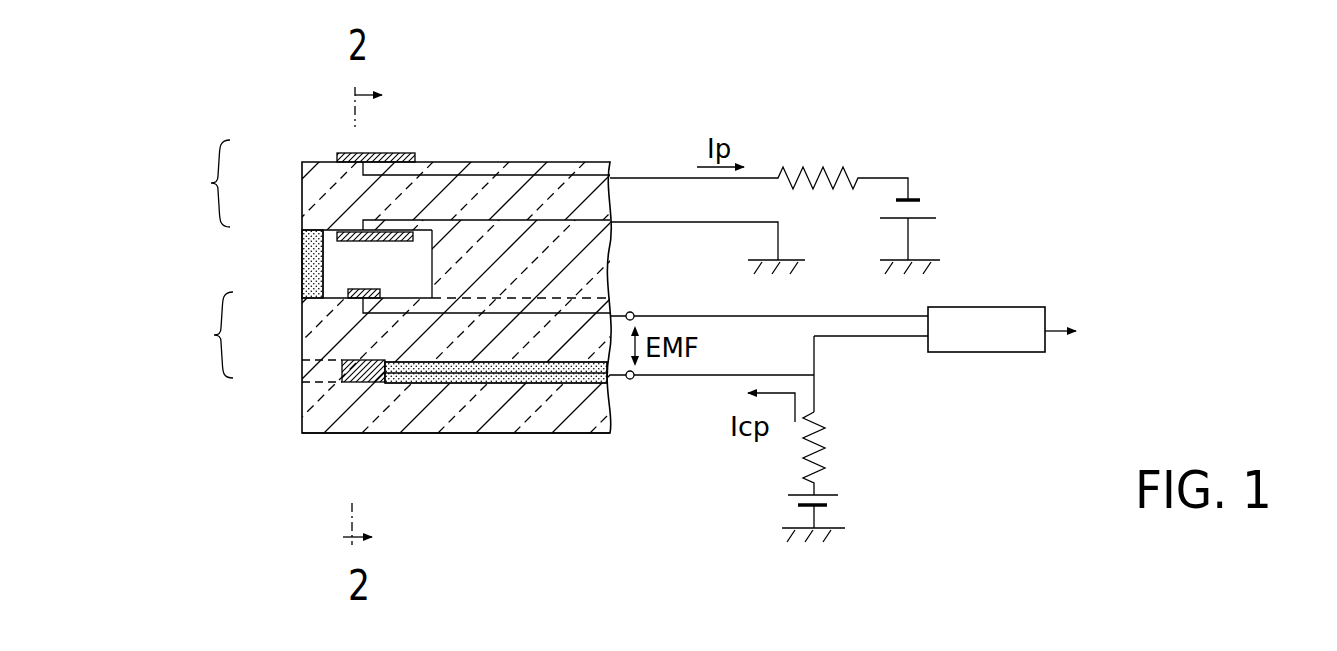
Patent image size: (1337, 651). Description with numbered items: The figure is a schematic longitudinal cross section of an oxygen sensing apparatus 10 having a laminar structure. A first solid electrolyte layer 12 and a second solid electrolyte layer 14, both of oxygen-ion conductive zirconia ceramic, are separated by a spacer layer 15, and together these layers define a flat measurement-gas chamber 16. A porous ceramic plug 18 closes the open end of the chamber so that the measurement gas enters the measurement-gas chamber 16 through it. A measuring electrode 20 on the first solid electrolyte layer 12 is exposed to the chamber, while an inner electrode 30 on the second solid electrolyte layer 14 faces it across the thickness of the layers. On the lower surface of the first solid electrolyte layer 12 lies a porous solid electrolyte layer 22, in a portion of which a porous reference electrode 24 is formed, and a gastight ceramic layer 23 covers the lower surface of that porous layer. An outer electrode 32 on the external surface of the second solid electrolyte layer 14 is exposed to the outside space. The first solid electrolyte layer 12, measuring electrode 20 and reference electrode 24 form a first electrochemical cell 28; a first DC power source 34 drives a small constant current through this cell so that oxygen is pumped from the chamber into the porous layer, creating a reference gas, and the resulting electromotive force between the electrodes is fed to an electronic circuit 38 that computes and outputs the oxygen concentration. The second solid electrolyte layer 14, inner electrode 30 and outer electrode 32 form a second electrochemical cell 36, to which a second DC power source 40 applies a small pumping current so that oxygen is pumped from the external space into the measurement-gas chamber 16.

The oxygen sensing apparatus 10 is at (586, 82).
The first solid electrolyte layer 12 is at (308, 333).
The second solid electrolyte layer 14 is at (317, 191).
The spacer layer 15 is at (563, 265).
The measurement-gas chamber 16 is at (424, 252).
The porous ceramic plug 18 is at (302, 265).
The measuring electrode 20 is at (350, 289).
The porous solid electrolyte layer 22 is at (445, 387).
The gastight ceramic layer 23 is at (388, 425).
The reference electrode 24 is at (357, 390).
The first electrochemical cell 28 is at (208, 335).
The inner electrode 30 is at (358, 252).
The outer electrode 32 is at (340, 153).
The first DC power source 34 is at (880, 497).
The second electrochemical cell 36 is at (202, 183).
The electronic circuit 38 is at (967, 340).
The second DC power source 40 is at (972, 205).